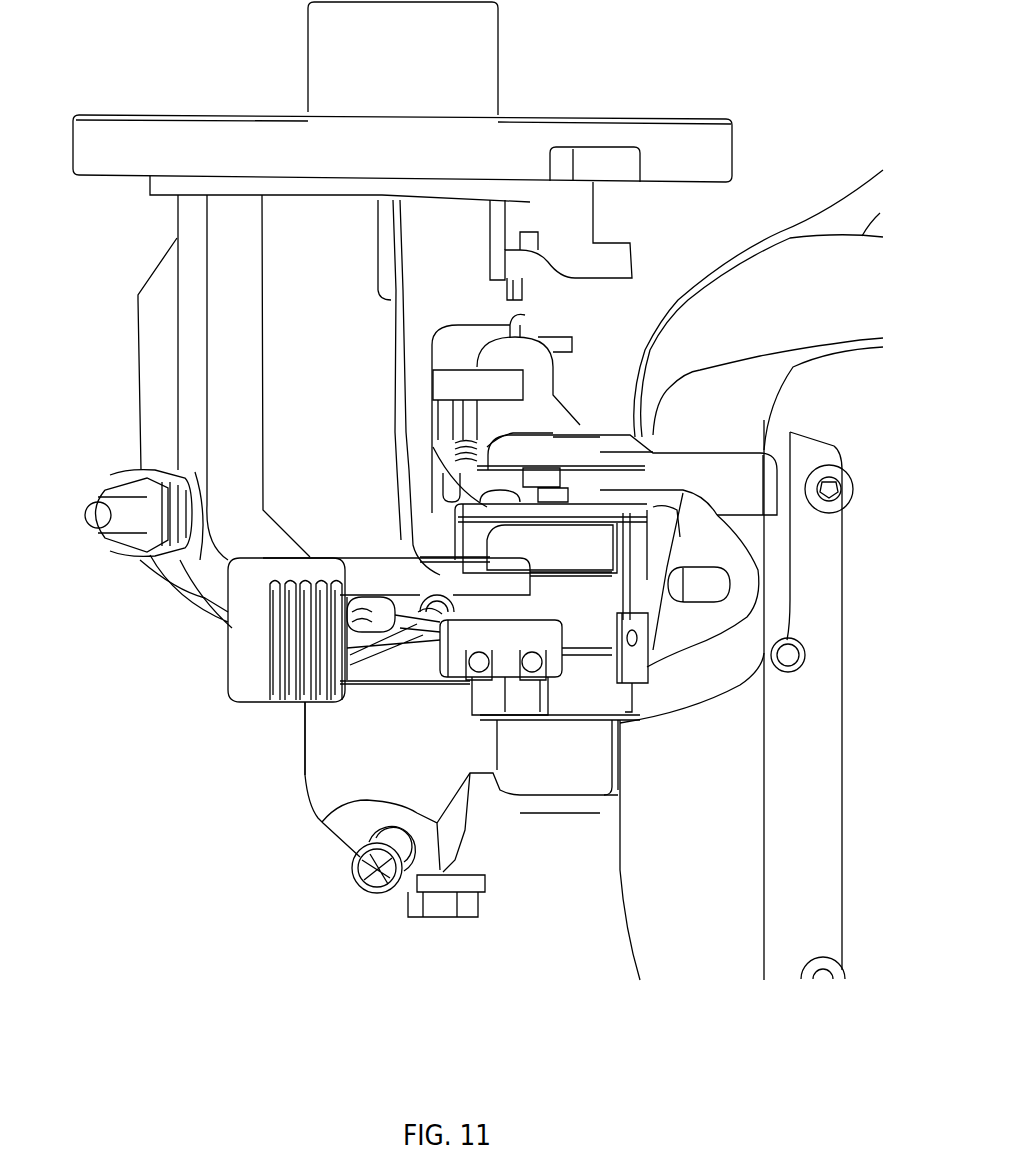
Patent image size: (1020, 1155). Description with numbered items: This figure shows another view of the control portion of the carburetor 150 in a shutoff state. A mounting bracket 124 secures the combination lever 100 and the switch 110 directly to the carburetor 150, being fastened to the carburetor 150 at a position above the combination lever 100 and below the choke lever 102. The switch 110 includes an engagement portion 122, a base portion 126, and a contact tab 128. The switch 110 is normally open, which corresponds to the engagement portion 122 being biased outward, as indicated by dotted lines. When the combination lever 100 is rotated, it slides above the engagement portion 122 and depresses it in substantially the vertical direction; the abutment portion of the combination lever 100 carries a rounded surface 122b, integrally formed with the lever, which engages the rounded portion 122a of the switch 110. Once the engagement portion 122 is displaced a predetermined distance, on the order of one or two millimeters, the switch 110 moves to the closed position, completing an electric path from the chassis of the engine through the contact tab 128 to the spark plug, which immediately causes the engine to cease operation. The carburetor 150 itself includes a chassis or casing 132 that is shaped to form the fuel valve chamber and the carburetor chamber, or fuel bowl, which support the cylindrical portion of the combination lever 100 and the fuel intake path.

The combination lever 100 is at (238, 700).
The choke lever 102 is at (726, 470).
The switch 110 is at (447, 692).
The engagement portion 122 is at (502, 604).
The rounded portion 122a is at (418, 612).
The rounded surface 122b is at (425, 594).
The mounting bracket 124 is at (587, 510).
The base portion 126 is at (546, 646).
The contact tab 128 is at (543, 716).
The chassis or casing 132 is at (595, 785).
The carburetor 150 is at (294, 927).